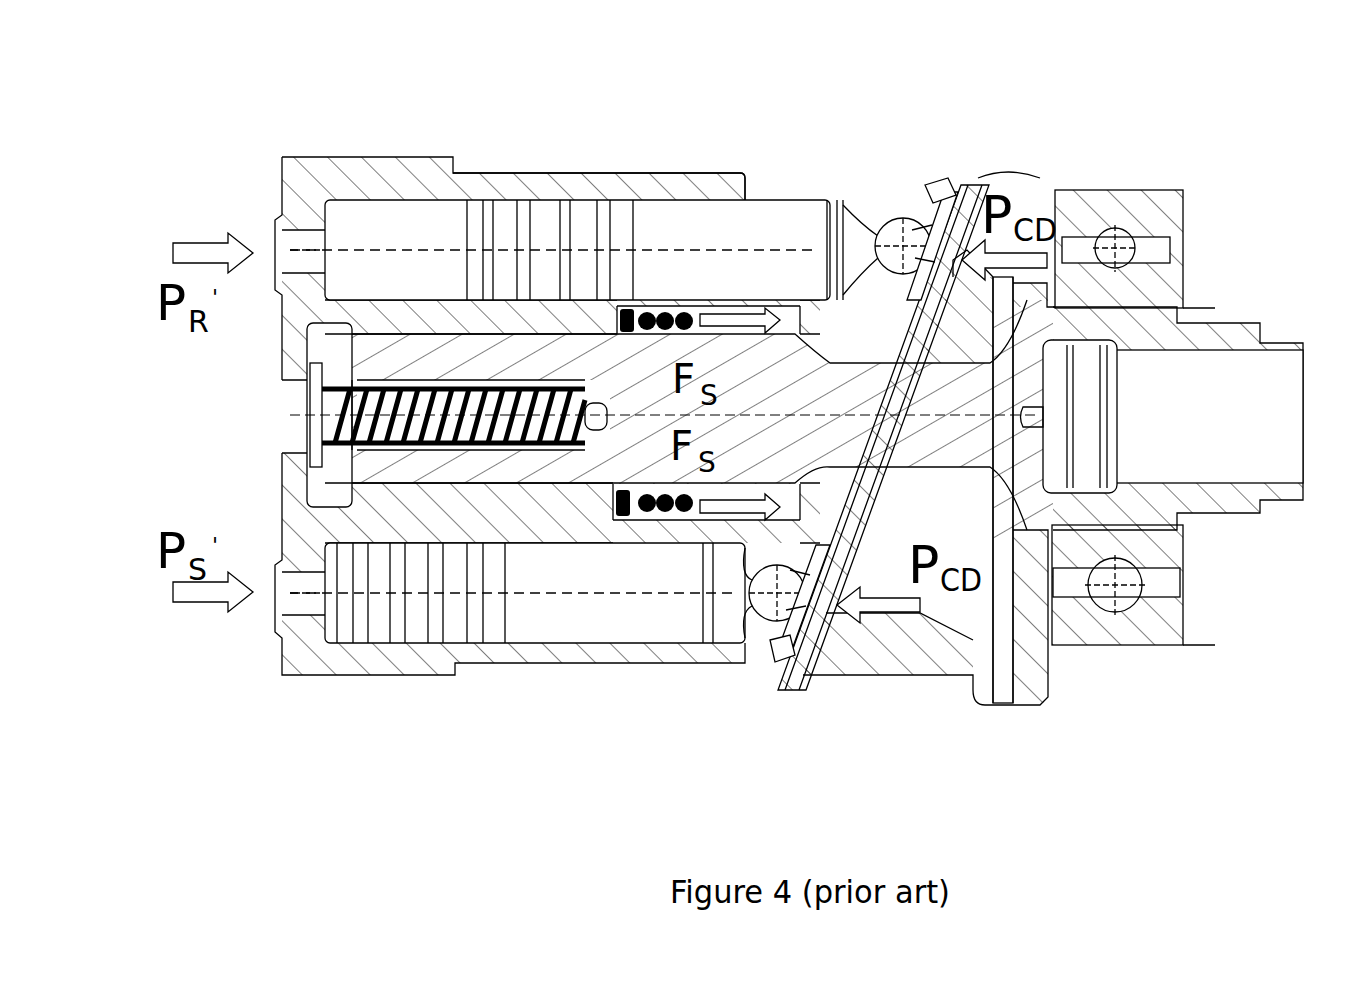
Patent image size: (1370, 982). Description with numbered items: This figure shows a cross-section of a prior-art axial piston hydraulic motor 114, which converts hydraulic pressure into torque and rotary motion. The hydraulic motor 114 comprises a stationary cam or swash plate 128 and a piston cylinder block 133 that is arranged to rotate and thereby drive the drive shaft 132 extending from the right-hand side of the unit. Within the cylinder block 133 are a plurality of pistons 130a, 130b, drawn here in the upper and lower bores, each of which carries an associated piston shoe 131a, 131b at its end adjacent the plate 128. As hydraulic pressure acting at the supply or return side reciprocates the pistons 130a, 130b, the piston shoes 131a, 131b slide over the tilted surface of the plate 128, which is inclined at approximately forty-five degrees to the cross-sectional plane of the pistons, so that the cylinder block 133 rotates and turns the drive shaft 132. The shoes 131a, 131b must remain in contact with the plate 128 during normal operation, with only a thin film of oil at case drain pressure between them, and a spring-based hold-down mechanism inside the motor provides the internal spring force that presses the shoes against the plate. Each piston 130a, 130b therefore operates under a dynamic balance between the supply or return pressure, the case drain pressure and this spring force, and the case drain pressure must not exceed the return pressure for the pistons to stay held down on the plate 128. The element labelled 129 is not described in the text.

The hydraulic motor 114 is at (406, 98).
The plate 128 is at (835, 610).
The seal 129 is at (620, 515).
The piston 130a is at (755, 230).
The piston 130b is at (620, 595).
The piston shoe 131a is at (940, 232).
The piston shoe 131b is at (778, 652).
The drive shaft 132 is at (1210, 430).
The piston cylinder block 133 is at (625, 188).